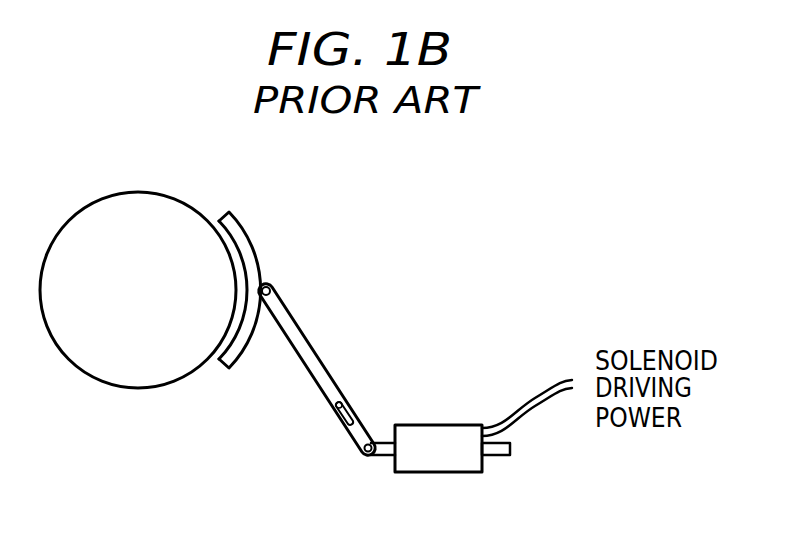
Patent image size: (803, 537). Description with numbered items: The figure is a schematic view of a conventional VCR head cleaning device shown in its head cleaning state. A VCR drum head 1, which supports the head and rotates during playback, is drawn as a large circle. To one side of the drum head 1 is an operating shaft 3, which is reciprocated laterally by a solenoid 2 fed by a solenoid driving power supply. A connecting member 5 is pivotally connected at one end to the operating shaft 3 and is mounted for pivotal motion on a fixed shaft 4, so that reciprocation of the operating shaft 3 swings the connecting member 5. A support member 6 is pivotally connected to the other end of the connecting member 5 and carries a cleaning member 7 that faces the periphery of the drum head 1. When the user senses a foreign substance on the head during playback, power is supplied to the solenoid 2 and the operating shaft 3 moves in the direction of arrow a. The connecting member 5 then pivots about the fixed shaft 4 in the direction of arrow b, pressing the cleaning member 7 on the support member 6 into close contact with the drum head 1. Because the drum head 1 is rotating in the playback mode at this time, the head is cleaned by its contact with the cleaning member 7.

The drum head 1 is at (133, 201).
The cleaning member 7 is at (222, 224).
The support member 6 is at (245, 242).
The connecting member 5 is at (313, 359).
The fixed shaft 4 is at (345, 398).
The solenoid 2 is at (440, 460).
The operating shaft 3 is at (502, 452).
The arrow a is at (365, 466).
The arrow b is at (277, 287).